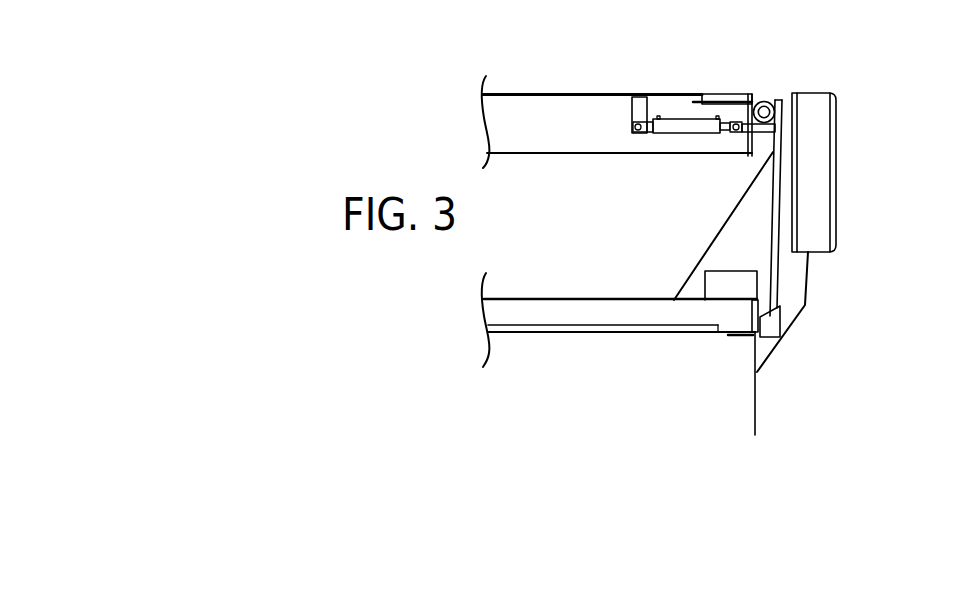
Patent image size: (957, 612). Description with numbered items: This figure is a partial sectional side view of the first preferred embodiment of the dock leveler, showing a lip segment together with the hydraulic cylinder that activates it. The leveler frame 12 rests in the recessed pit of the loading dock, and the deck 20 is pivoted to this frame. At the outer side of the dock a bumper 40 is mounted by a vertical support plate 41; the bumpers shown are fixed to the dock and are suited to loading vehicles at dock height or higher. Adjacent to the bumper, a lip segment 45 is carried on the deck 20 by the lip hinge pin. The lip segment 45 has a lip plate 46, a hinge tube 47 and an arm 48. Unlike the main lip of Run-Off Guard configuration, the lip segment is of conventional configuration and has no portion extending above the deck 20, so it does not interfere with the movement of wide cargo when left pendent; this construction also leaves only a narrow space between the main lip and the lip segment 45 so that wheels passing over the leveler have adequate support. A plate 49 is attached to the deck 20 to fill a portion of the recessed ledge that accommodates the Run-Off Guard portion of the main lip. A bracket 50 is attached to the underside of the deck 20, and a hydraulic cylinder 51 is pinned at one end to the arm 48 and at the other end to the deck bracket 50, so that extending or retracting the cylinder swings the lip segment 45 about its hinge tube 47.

The frame 12 is at (532, 296).
The deck 20 is at (518, 90).
The bumper 40 is at (837, 173).
The vertical support plate 41 is at (703, 249).
The lip segment 45 is at (777, 280).
The lip plate 46 is at (777, 280).
The hinge tube 47 is at (760, 99).
The arm 48 is at (757, 136).
The plate 49 is at (733, 93).
The bracket 50 is at (633, 108).
The hydraulic cylinder 51 is at (680, 137).